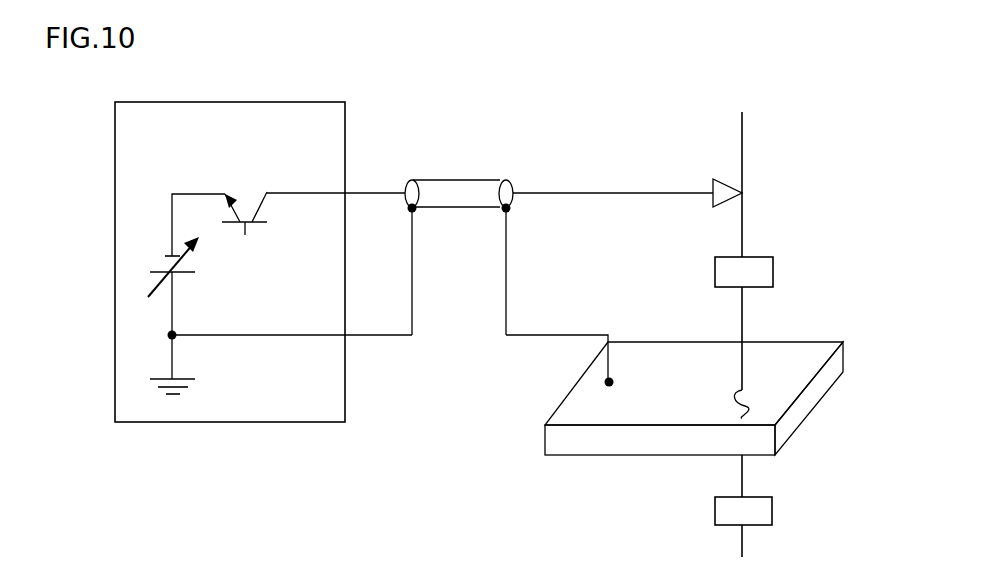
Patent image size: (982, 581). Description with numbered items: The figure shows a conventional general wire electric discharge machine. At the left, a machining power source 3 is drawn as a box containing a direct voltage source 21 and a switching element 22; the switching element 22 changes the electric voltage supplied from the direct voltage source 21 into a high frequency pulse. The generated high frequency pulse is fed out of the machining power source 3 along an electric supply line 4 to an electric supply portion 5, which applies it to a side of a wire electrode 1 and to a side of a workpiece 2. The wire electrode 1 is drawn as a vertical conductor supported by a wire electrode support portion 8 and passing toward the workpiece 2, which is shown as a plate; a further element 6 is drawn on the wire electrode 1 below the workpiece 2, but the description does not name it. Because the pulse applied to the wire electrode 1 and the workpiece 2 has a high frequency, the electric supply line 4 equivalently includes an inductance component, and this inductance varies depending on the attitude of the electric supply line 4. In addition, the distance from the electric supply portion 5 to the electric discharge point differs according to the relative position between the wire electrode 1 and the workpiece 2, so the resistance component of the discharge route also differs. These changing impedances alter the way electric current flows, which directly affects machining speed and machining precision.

The wire electrode 1 is at (771, 334).
The workpiece 2 is at (694, 373).
The machining power source 3 is at (230, 302).
The electric supply line 4 is at (442, 240).
The electric supply portion 5 is at (708, 156).
The terminating element 6 is at (778, 511).
The wire electrode support portion 8 is at (779, 260).
The direct voltage source 21 is at (208, 315).
The switching element 22 is at (288, 189).